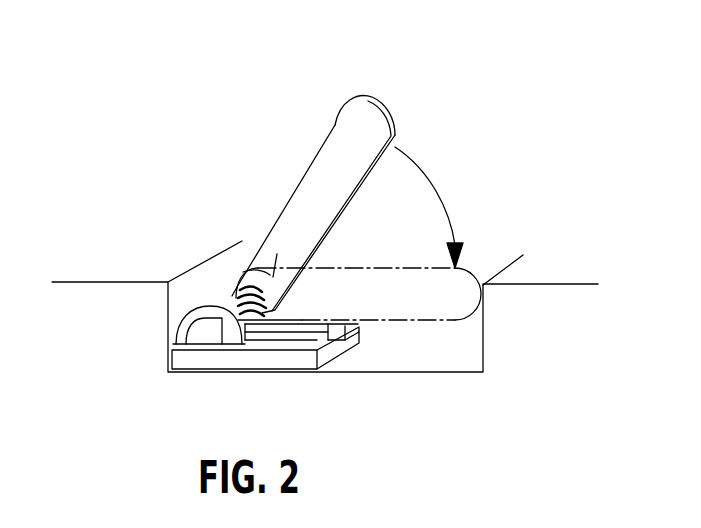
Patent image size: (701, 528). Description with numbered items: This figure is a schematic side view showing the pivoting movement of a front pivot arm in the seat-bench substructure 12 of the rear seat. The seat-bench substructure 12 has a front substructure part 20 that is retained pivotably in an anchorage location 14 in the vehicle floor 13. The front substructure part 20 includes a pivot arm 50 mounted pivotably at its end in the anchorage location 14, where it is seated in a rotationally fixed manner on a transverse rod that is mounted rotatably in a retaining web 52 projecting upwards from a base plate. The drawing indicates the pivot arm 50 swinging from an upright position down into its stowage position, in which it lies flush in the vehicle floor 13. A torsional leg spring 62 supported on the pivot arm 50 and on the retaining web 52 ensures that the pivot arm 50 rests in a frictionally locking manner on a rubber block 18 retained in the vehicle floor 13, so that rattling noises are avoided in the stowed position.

The seat-bench substructure 12 is at (283, 124).
The vehicle floor 13 is at (540, 272).
The anchorage location 14 is at (255, 340).
The rubber block 18 is at (313, 332).
The front substructure part 20 is at (273, 217).
The pivot arm 50 is at (370, 137).
The retaining web 52 is at (200, 330).
The torsional leg spring 62 is at (240, 273).